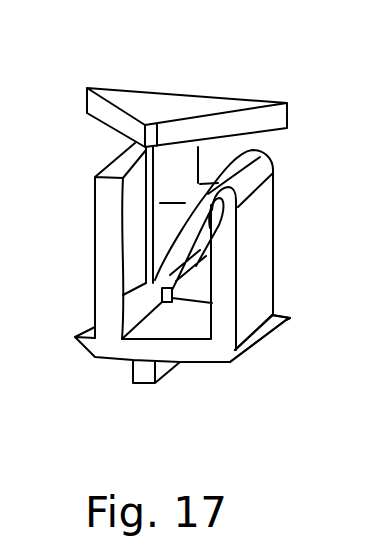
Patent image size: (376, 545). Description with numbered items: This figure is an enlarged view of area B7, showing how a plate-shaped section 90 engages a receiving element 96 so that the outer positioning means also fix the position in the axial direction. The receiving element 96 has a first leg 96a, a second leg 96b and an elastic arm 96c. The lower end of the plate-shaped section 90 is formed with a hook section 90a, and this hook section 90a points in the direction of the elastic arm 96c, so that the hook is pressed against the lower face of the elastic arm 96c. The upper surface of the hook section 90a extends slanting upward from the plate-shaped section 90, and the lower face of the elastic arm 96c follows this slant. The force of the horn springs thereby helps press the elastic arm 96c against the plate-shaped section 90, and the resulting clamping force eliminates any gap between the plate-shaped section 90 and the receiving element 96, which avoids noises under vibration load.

The area B7 is at (187, 101).
The plate-shaped section 90 is at (242, 156).
The hook section 90a is at (170, 302).
The receiving element 96 is at (188, 263).
The first leg of the receiving element 96a is at (253, 208).
The second leg 96b is at (110, 259).
The elastic arm 96c is at (287, 320).